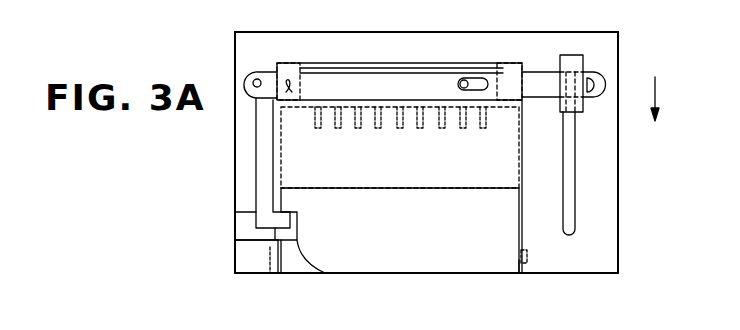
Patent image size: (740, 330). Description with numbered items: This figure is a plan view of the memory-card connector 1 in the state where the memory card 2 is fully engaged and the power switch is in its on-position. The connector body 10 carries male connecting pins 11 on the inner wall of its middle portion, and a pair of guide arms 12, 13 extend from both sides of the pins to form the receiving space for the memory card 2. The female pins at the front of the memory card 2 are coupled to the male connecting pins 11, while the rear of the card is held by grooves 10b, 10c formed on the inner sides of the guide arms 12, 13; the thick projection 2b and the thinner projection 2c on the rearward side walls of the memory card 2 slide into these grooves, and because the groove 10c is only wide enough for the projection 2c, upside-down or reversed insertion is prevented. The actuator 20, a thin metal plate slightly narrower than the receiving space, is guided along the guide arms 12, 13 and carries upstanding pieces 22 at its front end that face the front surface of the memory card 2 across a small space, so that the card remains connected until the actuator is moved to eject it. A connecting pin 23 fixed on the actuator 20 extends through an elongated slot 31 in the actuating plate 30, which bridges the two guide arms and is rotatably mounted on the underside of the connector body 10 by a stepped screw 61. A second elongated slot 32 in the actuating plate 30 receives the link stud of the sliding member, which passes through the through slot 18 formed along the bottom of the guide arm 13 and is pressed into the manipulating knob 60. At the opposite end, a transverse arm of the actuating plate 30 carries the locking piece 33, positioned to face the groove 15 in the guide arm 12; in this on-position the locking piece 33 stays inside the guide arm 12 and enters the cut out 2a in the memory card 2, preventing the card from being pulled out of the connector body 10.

The memory-card connector 1 is at (231, 64).
The connector body 10 is at (387, 43).
The groove 10b is at (528, 260).
The groove 10c is at (270, 262).
The memory card 2 is at (400, 206).
The cut out 2a is at (324, 272).
The projection 2b is at (519, 274).
The projection 2c is at (278, 274).
The male connecting pins 11 is at (378, 128).
The guide arm 12 is at (242, 258).
The guide arm 13 is at (609, 169).
The groove 15 is at (242, 228).
The through slot 18 is at (575, 217).
The actuator 20 is at (356, 164).
The upstanding pieces 22 is at (290, 63).
The connecting pin 23 is at (462, 78).
The actuating plate 30 is at (352, 82).
The elongated slot 31 is at (476, 78).
The elongated slot 32 is at (597, 78).
The locking piece 33 is at (267, 221).
The manipulating knob 60 is at (577, 58).
The stepped screw 61 is at (258, 78).